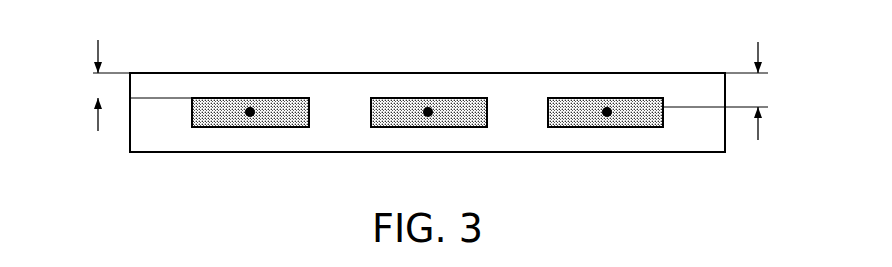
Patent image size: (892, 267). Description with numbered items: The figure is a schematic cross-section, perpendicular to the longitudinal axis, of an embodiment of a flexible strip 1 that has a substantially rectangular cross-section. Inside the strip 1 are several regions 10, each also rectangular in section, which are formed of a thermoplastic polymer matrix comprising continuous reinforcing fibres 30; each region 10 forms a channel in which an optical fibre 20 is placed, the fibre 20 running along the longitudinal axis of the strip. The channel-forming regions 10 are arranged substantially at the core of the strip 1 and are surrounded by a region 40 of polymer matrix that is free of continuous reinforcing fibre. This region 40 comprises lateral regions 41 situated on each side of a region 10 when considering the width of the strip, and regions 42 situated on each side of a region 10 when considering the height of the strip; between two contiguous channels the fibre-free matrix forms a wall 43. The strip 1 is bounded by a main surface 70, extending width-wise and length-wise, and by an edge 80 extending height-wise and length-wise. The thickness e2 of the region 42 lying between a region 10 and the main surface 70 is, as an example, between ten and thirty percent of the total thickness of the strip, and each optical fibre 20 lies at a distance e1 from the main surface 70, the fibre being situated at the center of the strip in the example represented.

The flexible strip 1 is at (548, 55).
The region forming a channel 10 is at (378, 128).
The optical fibre 20 is at (430, 106).
The continuous reinforcing fibres 30 is at (473, 120).
The region of polymer matrix free of continuous reinforcing fibre 40 is at (669, 80).
The lateral regions 41 is at (163, 132).
The regions situated on each side height-wise 42 is at (225, 85).
The wall 43 is at (345, 100).
The main surface 70 is at (497, 73).
The edge 80 is at (128, 143).
The distance e1 is at (729, 91).
The thickness e2 is at (96, 85).